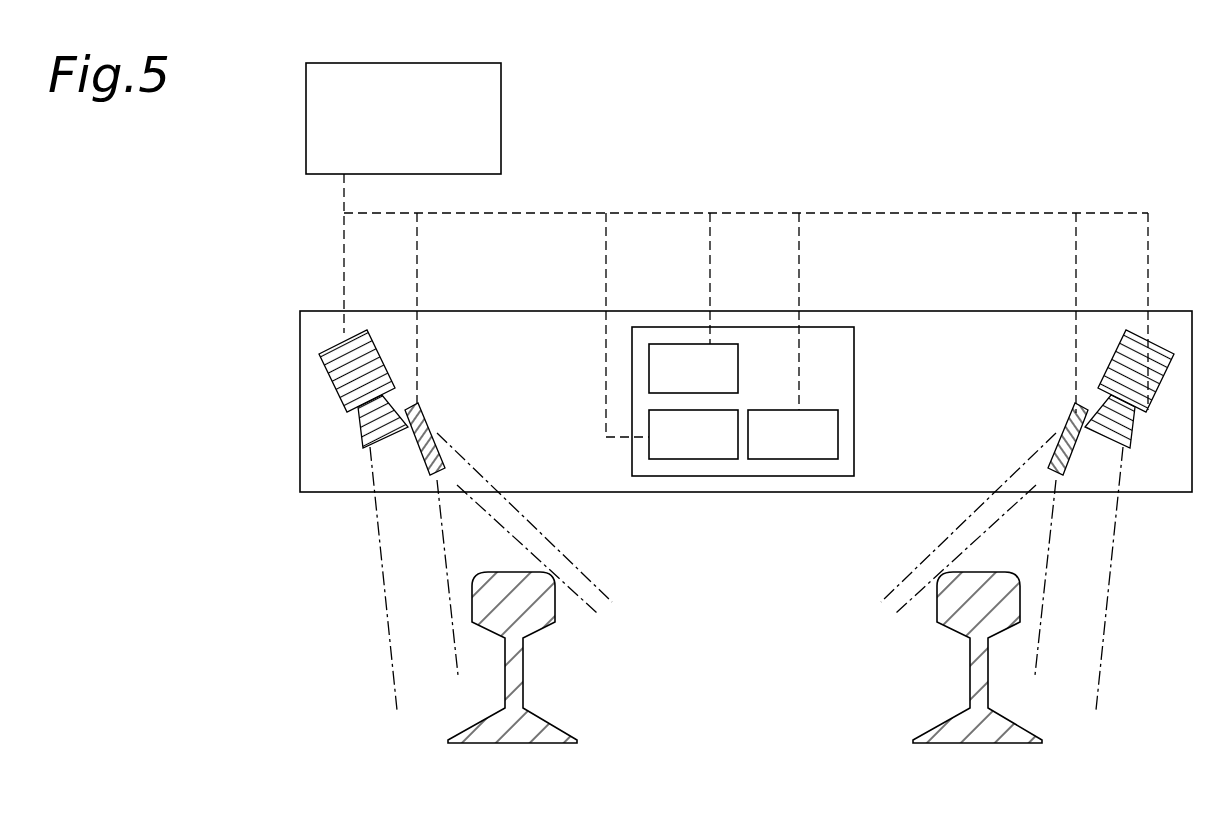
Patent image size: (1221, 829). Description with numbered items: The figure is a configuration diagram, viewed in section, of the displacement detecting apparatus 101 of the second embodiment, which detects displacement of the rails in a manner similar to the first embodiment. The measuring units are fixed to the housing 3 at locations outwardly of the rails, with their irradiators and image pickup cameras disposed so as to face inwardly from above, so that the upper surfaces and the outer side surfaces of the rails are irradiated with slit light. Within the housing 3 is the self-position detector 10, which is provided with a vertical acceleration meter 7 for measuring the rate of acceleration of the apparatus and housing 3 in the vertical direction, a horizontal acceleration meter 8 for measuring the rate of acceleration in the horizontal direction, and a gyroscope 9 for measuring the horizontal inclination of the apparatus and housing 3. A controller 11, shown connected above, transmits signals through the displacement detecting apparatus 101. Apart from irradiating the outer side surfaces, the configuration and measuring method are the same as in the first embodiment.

The housing 3 is at (903, 450).
The vertical acceleration meter 7 is at (682, 352).
The horizontal acceleration meter 8 is at (775, 448).
The gyroscope 9 is at (687, 448).
The self-position detector 10 is at (823, 327).
The controller 11 is at (502, 100).
The displacement detecting apparatus 101 is at (926, 163).